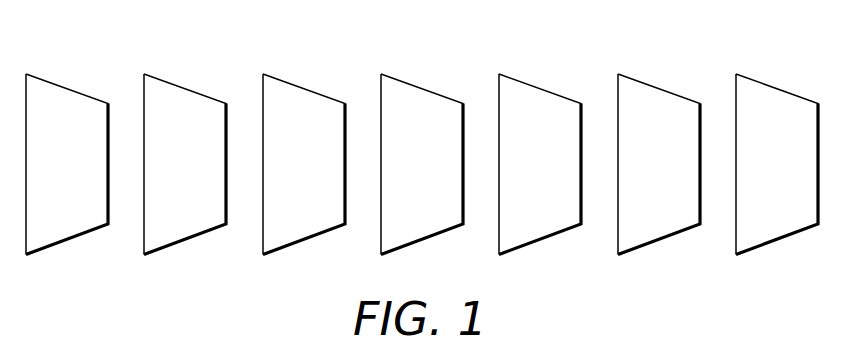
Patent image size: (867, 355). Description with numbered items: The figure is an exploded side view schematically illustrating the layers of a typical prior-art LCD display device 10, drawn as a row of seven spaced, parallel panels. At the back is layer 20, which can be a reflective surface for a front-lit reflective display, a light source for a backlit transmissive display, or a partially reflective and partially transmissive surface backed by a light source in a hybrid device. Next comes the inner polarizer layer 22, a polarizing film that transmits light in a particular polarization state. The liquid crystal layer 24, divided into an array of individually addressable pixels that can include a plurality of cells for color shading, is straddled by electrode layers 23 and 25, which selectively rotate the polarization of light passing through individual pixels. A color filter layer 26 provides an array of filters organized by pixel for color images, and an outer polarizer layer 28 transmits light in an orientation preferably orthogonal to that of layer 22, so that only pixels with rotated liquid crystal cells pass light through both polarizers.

The LCD display device 10 is at (388, 56).
The reflective surface layer 20 is at (73, 220).
The inner polarizer layer 22 is at (191, 220).
The electrode layer 23 is at (310, 220).
The liquid crystal layer 24 is at (428, 220).
The electrode layer 25 is at (546, 220).
The color filter layer 26 is at (665, 220).
The outer polarizer layer 28 is at (783, 220).